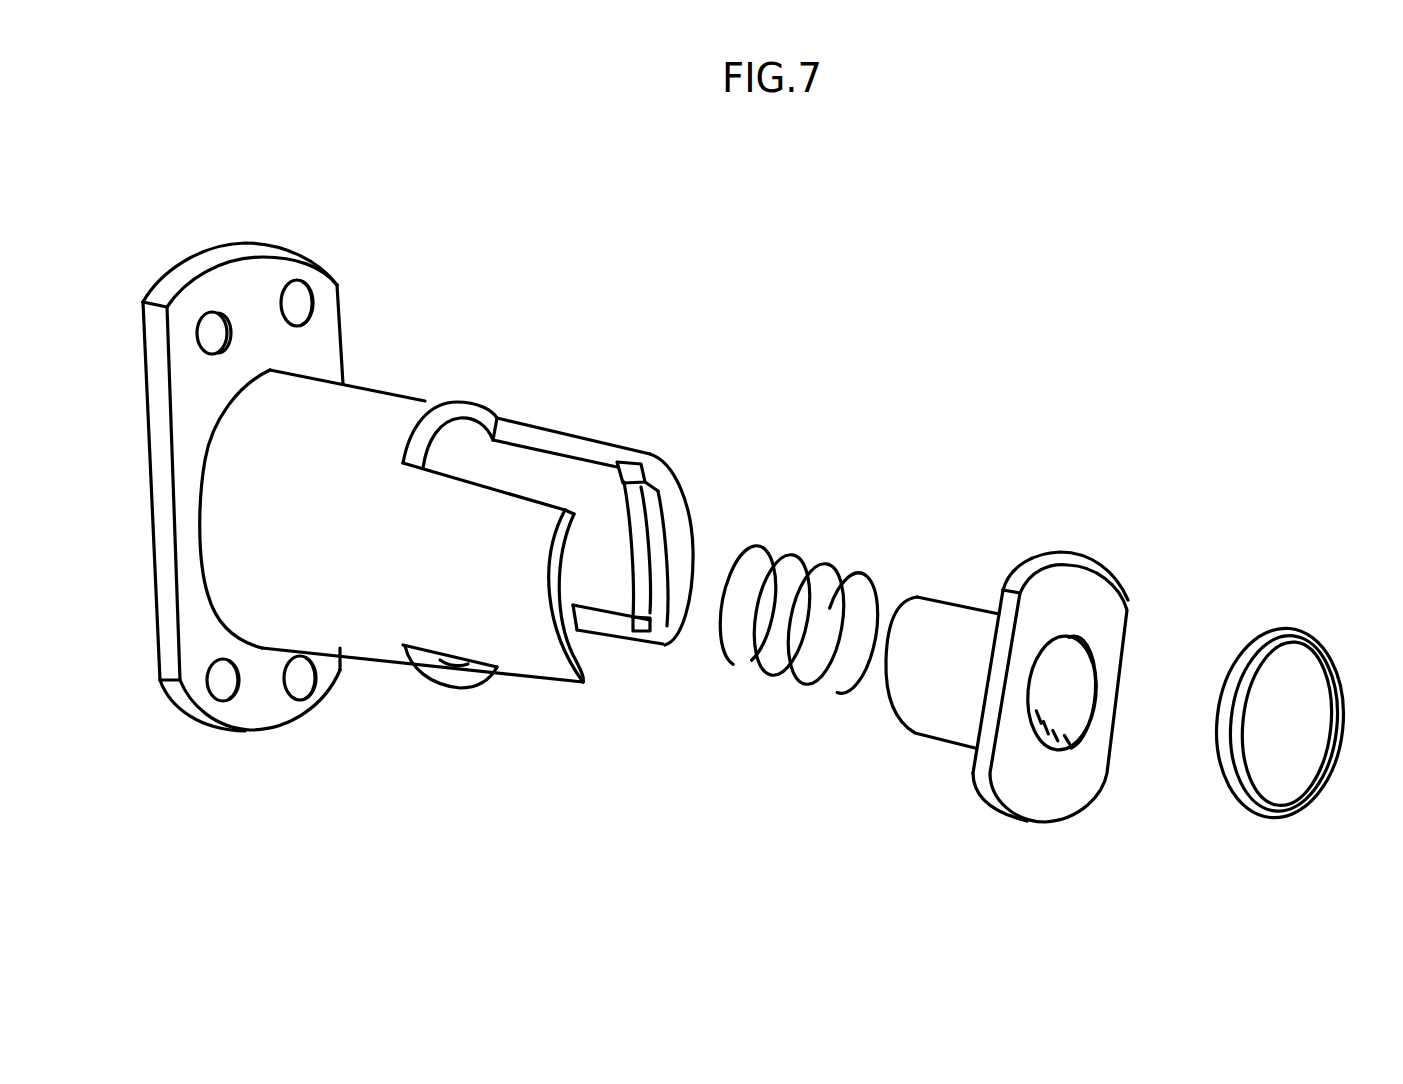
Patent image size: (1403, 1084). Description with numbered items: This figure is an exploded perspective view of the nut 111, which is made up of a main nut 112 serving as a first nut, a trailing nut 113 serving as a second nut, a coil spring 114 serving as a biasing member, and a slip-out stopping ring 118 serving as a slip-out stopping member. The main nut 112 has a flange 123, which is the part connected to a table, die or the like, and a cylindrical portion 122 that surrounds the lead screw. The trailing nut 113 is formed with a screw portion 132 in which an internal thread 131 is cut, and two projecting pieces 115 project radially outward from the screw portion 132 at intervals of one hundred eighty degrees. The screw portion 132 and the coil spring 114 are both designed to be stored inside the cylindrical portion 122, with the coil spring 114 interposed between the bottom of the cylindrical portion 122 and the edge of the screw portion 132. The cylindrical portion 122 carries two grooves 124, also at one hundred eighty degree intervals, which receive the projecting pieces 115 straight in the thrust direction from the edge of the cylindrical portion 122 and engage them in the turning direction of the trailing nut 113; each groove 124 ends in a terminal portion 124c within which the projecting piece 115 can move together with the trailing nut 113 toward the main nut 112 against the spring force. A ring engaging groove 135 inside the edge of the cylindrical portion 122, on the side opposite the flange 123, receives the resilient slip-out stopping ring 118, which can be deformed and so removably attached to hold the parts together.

The nut 111 is at (797, 355).
The main nut 112 is at (333, 268).
The trailing nut 113 is at (1017, 522).
The coil spring 114 is at (782, 687).
The projecting pieces 115 is at (1067, 575).
The slip-out stopping ring 118 is at (1287, 625).
The cylindrical portion 122 is at (377, 400).
The flange 123 is at (210, 248).
The grooves 124 is at (543, 437).
The terminal portion 124c is at (473, 405).
The internal thread 131 is at (1087, 660).
The screw portion 132 is at (942, 612).
The ring engaging groove 135 is at (647, 545).